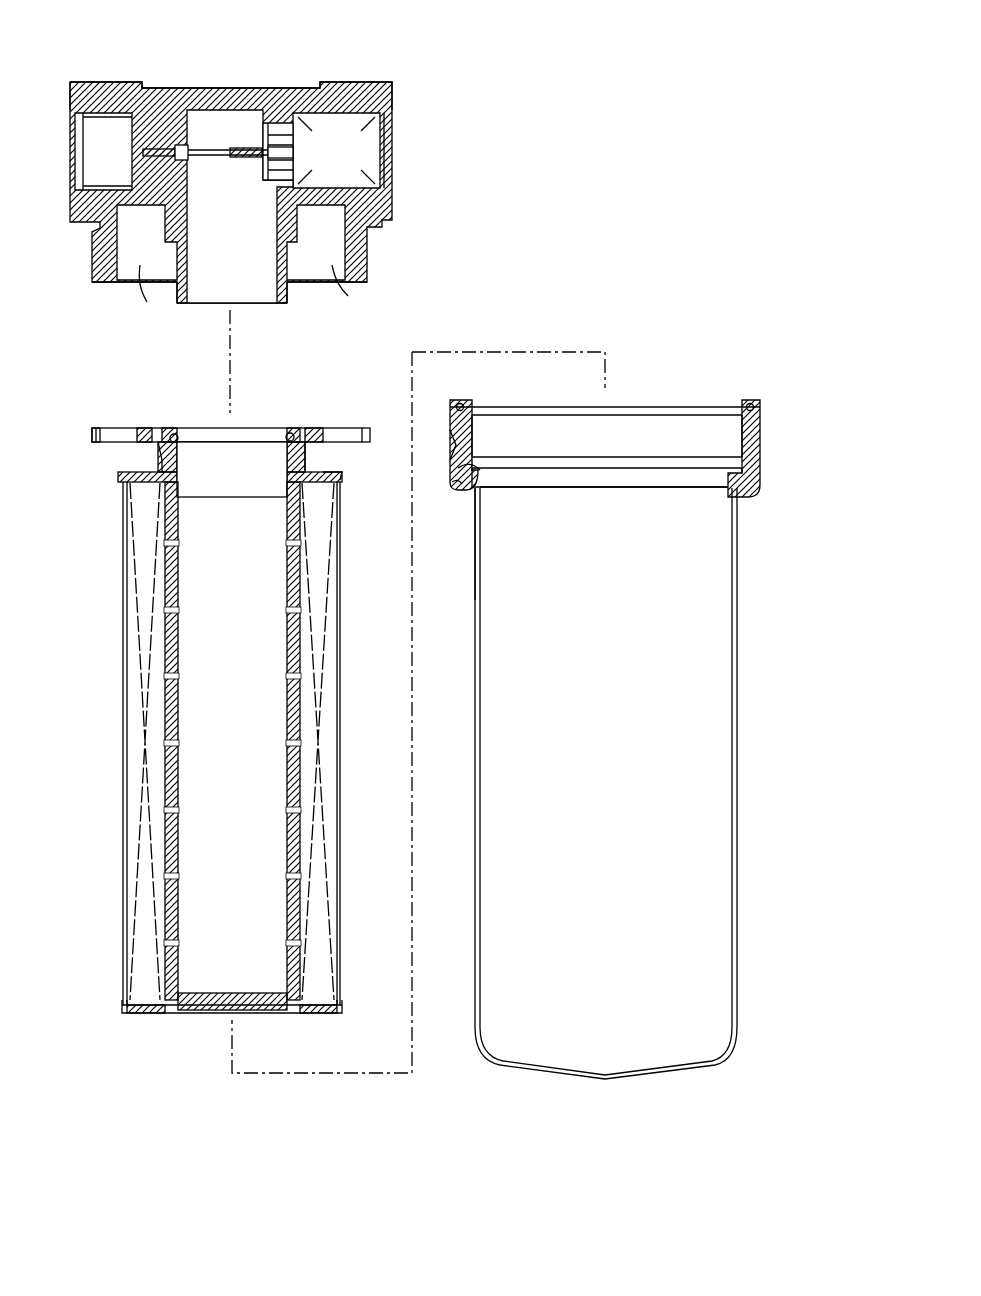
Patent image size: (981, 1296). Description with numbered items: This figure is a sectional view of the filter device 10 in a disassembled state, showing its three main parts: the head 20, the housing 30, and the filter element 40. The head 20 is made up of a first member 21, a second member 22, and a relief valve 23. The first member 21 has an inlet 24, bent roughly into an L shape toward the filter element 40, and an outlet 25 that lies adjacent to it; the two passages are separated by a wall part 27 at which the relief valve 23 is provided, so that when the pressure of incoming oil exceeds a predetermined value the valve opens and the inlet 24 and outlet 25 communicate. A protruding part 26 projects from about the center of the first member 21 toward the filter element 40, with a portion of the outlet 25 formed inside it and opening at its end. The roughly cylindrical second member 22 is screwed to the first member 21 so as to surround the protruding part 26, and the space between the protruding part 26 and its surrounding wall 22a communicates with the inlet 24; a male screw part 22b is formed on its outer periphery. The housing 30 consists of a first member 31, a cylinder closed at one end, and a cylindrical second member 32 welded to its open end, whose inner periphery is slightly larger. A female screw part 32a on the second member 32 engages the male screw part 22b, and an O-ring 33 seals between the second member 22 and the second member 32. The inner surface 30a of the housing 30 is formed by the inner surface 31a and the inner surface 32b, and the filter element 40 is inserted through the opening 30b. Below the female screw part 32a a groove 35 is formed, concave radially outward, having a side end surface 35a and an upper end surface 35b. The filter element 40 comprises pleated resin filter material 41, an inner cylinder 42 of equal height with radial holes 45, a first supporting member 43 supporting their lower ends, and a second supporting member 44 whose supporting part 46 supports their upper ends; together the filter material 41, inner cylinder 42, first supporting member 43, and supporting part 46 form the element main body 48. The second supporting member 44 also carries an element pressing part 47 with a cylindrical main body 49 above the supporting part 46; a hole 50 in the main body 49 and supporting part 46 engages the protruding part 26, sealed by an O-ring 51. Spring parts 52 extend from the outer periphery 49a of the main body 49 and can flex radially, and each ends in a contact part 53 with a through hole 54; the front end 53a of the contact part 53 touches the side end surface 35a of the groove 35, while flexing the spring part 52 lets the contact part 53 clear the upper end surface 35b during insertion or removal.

The filter device 10 is at (548, 76).
The head 20 is at (397, 217).
The first member 21 is at (395, 97).
The second member 22 is at (372, 268).
The surrounding wall 22a is at (93, 262).
The male screw part 22b is at (100, 283).
The relief valve 23 is at (237, 146).
The inlet 24 is at (360, 155).
The outlet 25 is at (100, 160).
The protruding part 26 is at (286, 300).
The wall part 27 is at (268, 185).
The housing 30 is at (740, 742).
The inner surface 30a is at (553, 518).
The opening 30b is at (722, 425).
The first member 31 is at (740, 603).
The inner surface 31a is at (481, 575).
The second member 32 is at (762, 458).
The female screw part 32a is at (475, 438).
The inner surface 32b is at (490, 487).
The O-ring 33 is at (463, 405).
The groove 35 is at (470, 489).
The side end surface 35a is at (461, 472).
The upper end surface 35b is at (455, 432).
The filter element 40 is at (118, 760).
The filter material 41 is at (127, 706).
The inner cylinder 42 is at (188, 741).
The first supporting member 43 is at (150, 1013).
The second supporting member 44 is at (150, 466).
The holes 45 is at (172, 545).
The supporting part 46 is at (333, 478).
The element pressing part 47 is at (290, 428).
The element main body 48 is at (118, 585).
The main body 49 is at (306, 457).
The outer periphery 49a is at (155, 455).
The hole 50 is at (268, 470).
The O-ring 51 is at (185, 440).
The spring part 52 is at (168, 430).
The contact part 53 is at (144, 430).
The front end 53a is at (93, 432).
The hole 54 is at (114, 430).